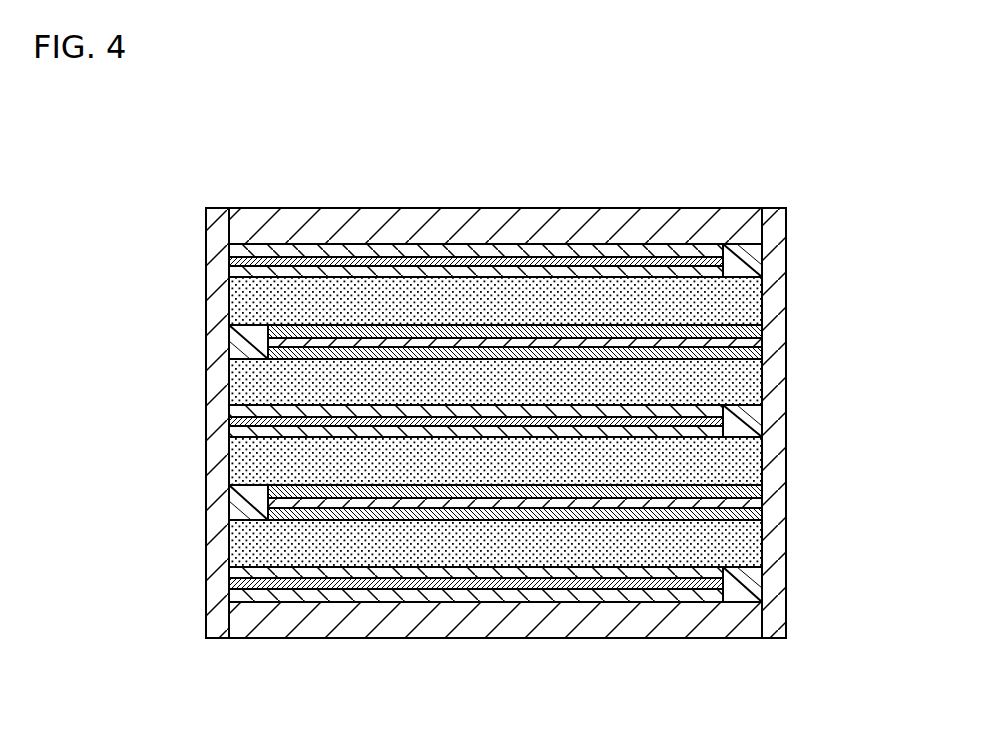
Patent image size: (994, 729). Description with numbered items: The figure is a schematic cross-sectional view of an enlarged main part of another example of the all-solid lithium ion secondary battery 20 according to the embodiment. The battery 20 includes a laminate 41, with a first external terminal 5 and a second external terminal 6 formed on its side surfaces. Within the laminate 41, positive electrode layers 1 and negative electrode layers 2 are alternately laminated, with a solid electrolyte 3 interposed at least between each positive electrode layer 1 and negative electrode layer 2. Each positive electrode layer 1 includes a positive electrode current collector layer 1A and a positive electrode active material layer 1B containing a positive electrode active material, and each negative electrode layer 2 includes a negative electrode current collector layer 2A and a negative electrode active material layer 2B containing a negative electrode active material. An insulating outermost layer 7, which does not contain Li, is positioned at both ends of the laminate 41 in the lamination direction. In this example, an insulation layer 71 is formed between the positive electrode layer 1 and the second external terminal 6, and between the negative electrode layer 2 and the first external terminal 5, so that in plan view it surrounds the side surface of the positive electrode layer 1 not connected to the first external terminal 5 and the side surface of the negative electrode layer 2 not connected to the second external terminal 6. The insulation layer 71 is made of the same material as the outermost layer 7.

The all-solid lithium ion secondary battery 20 is at (832, 167).
The outermost layer 7 is at (300, 216).
The second external terminal 6 is at (773, 593).
The first external terminal 5 is at (217, 348).
The laminate 41 is at (776, 275).
The insulation layer 71 is at (745, 258).
The positive electrode layer 1 is at (471, 416).
The positive electrode current collector layer 1A is at (229, 261).
The positive electrode active material layer 1B is at (229, 252).
The negative electrode layer 2 is at (594, 415).
The negative electrode current collector layer 2A is at (762, 343).
The negative electrode active material layer 2B is at (762, 328).
The solid electrolyte 3 is at (735, 388).